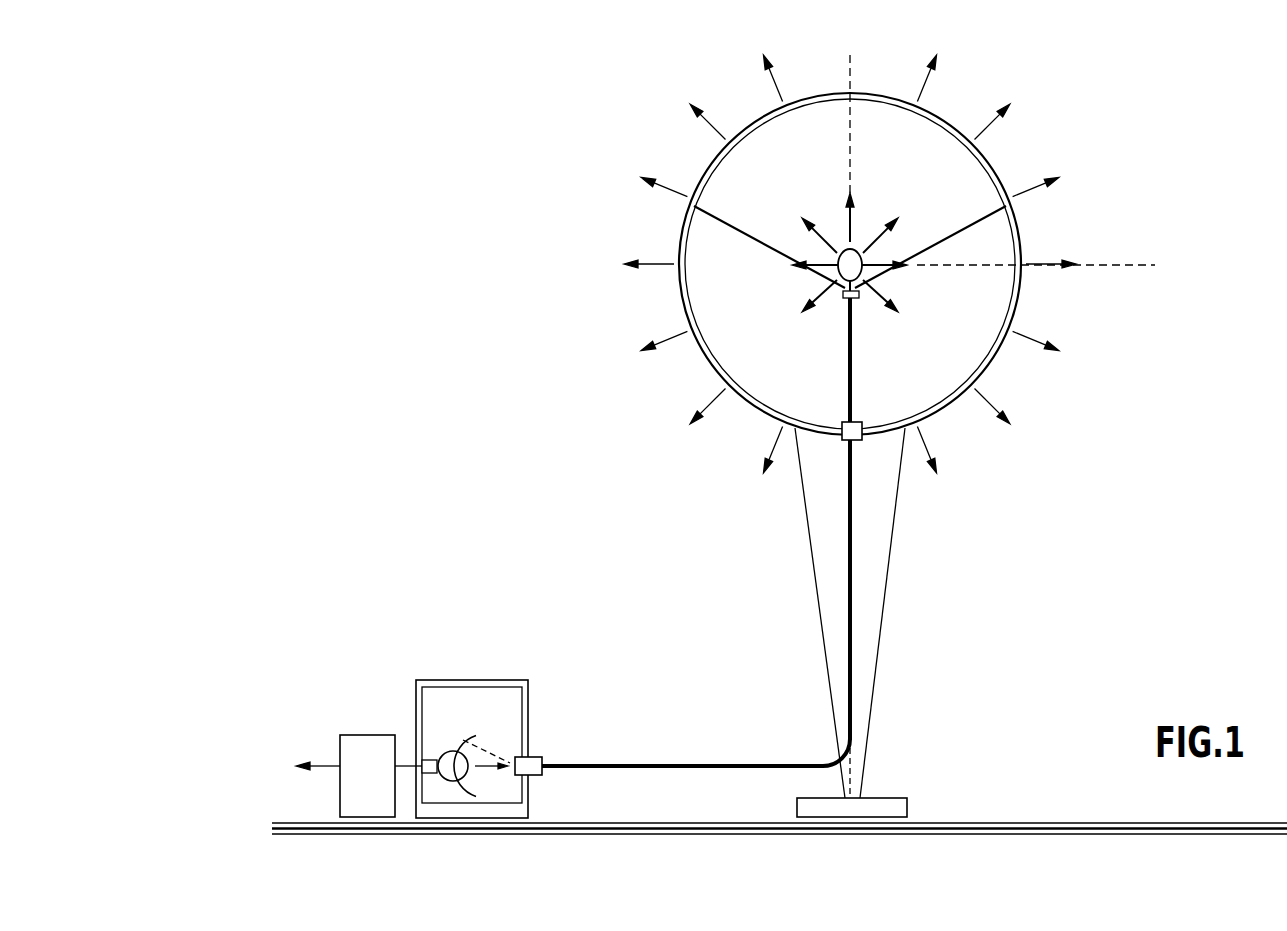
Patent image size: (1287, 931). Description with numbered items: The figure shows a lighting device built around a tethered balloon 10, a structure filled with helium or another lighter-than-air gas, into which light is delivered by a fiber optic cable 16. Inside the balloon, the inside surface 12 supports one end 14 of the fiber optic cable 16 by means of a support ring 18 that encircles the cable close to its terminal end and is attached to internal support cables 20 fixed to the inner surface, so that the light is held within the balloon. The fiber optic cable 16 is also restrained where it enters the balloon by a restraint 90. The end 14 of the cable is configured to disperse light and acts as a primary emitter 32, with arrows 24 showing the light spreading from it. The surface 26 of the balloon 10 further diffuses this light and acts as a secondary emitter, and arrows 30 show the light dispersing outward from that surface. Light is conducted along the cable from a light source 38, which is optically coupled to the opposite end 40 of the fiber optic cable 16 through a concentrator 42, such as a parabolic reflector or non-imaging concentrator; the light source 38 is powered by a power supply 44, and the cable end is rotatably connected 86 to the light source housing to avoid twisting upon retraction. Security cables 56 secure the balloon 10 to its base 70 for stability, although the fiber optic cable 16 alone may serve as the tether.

The balloon 10 is at (850, 264).
The inside surface 12 is at (732, 372).
The end of fiber optic cable 14 is at (840, 282).
The fiber optic cable 16 is at (853, 590).
The support ring 18 is at (862, 297).
The internal support cables 20 is at (740, 229).
The arrows showing light dispersal 24 is at (815, 262).
The surface of balloon 26 is at (708, 163).
The arrows showing light dispersal from balloon surface 30 is at (676, 343).
The primary emitter 32 is at (863, 244).
The light source 38 is at (505, 680).
The end of fiber optic cable 40 is at (539, 775).
The concentrator 42 is at (463, 735).
The power supply 44 is at (360, 735).
The security cables 56 is at (811, 563).
The base 70 is at (893, 798).
The rotatable connection 86 is at (541, 757).
The restraint 90 is at (842, 440).